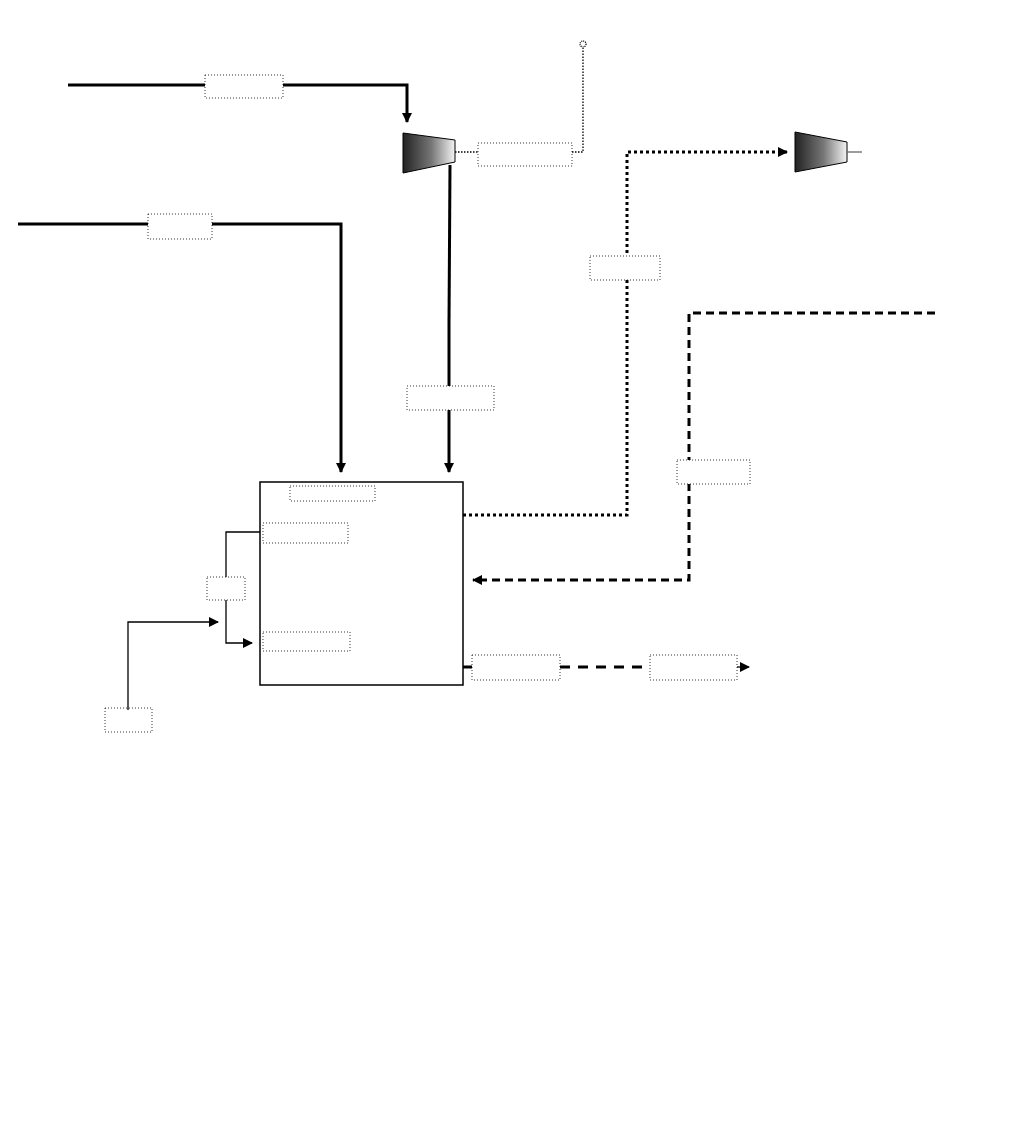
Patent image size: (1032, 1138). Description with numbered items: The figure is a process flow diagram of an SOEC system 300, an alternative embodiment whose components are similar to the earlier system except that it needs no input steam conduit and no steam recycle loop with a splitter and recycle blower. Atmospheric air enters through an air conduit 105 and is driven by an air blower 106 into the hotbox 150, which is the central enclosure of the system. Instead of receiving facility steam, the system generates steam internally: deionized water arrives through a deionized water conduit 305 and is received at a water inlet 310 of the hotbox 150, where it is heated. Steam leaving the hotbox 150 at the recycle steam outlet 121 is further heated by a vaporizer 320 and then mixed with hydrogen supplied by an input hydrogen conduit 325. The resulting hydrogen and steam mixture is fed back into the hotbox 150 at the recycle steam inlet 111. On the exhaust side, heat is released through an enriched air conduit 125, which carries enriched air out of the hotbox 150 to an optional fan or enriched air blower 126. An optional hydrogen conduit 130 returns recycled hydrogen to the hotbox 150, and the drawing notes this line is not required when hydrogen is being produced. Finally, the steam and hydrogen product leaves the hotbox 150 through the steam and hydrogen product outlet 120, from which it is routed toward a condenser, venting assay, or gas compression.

The SOEC system 300 is at (537, 1040).
The air conduit 105 is at (237, 88).
The air blower 106 is at (479, 247).
The deionized water conduit 305 is at (179, 333).
The water inlet 310 is at (349, 494).
The recycle steam outlet 121 is at (321, 533).
The hotbox 150 is at (361, 583).
The recycle steam inlet 111 is at (321, 643).
The vaporizer 320 is at (233, 587).
The input hydrogen conduit 325 is at (161, 677).
The enriched air conduit 125 is at (625, 323).
The enriched air blower 126 is at (828, 142).
The hydrogen conduit 130 is at (704, 437).
The steam and hydrogen product outlet 120 is at (465, 664).